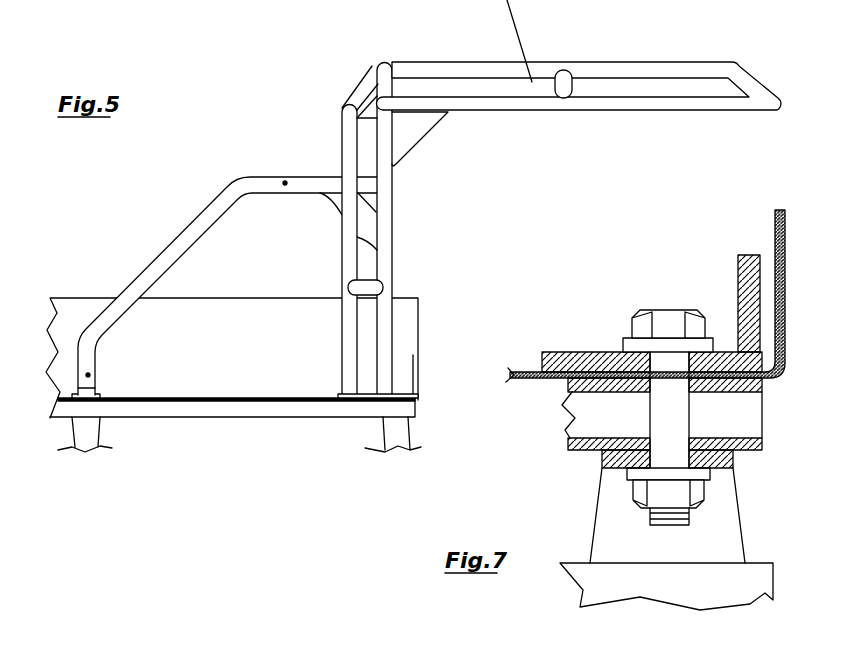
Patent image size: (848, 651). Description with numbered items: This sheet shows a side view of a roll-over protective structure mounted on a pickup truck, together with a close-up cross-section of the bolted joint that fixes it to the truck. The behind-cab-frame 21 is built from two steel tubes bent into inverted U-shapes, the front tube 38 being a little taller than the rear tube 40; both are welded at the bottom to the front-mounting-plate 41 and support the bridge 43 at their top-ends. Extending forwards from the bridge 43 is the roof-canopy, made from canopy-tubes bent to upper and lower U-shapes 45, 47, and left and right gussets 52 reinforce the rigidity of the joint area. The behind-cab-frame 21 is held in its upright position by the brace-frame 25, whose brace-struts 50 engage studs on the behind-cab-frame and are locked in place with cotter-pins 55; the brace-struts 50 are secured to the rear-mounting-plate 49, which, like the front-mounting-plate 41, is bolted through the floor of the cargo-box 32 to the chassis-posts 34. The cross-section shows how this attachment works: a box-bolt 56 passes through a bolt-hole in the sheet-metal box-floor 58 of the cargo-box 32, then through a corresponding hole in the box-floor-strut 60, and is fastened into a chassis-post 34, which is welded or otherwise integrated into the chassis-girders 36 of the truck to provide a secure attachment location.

In FIG. 5, the behind-cab-frame 21 is at (386, 266).
In FIG. 5, the brace-frame 25 is at (143, 267).
In FIG. 5, the cargo-box 32 is at (270, 350).
In FIG. 5, the chassis-posts 34 is at (385, 437).
In FIG. 7, the chassis-posts 34 is at (725, 550).
In FIG. 7, the chassis-girders 36 is at (578, 572).
In FIG. 5, the front tube 38 is at (387, 226).
In FIG. 5, the rear tube 40 is at (345, 257).
In FIG. 5, the front-mounting-plate 41 is at (367, 393).
In FIG. 7, the front-mounting-plate 41 is at (603, 360).
In FIG. 5, the bridge 43 is at (362, 90).
In FIG. 5, the upper canopy-tube 45 is at (654, 70).
In FIG. 5, the lower canopy-tube 47 is at (672, 105).
In FIG. 5, the rear-mounting-plate 49 is at (100, 393).
In FIG. 5, the brace-struts 50 is at (204, 222).
In FIG. 5, the gussets 52 is at (413, 135).
In FIG. 5, the cotter-pins 55 is at (285, 183).
In FIG. 7, the box-bolts 56 is at (668, 328).
In FIG. 5, the box-floor 58 is at (198, 398).
In FIG. 7, the box-floor 58 is at (527, 383).
In FIG. 5, the box-floor-struts 60 is at (245, 412).
In FIG. 7, the box-floor-struts 60 is at (620, 425).